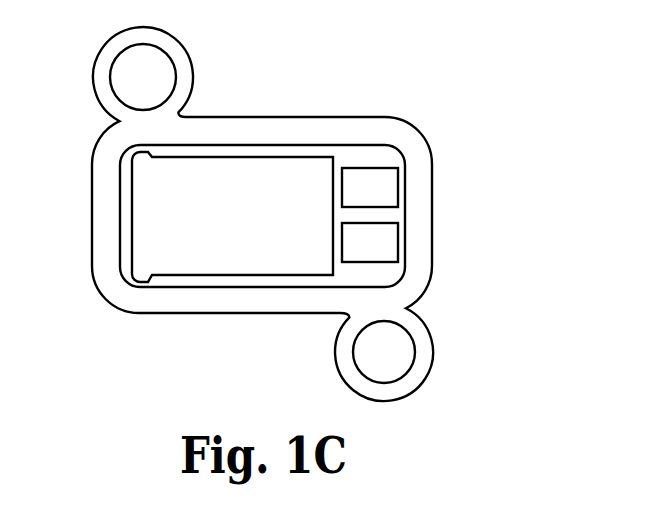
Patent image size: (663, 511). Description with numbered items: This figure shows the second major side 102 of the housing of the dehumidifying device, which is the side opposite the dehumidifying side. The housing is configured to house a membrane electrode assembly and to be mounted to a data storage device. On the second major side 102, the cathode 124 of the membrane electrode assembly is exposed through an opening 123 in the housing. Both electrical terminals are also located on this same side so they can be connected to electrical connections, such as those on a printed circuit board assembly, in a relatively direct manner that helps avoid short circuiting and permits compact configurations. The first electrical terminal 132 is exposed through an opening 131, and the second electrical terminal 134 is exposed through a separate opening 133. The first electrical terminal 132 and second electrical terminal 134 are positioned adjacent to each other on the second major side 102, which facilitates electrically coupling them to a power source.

The second major side 102 is at (385, 158).
The opening 123 is at (262, 175).
The cathode 124 is at (232, 217).
The opening 131 is at (416, 132).
The first electrical terminal 132 is at (390, 190).
The opening 133 is at (419, 274).
The second electrical terminal 134 is at (392, 243).